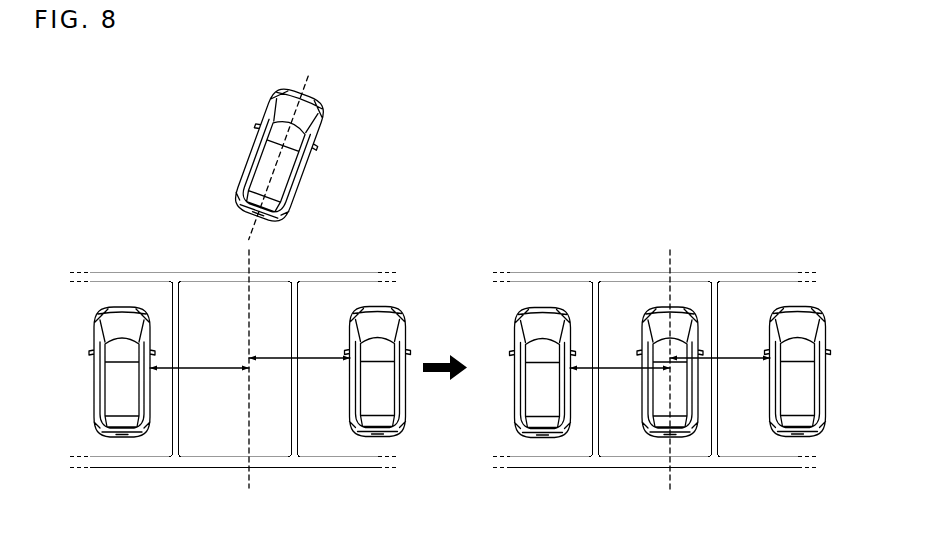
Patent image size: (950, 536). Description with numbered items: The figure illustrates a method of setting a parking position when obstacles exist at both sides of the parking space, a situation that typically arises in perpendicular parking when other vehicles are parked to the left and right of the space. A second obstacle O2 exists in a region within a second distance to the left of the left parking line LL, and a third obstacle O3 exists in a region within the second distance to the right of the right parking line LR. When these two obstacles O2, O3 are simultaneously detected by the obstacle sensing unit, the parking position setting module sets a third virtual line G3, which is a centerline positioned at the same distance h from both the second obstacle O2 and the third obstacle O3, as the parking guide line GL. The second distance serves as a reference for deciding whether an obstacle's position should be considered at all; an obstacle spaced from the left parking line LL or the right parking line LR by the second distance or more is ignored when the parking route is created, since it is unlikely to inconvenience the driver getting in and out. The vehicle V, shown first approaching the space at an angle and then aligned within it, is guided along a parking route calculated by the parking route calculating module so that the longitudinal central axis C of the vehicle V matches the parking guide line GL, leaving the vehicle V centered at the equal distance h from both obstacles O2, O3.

The vehicle V is at (280, 88).
The longitudinal central axis C is at (308, 77).
The left parking line LL is at (595, 299).
The right parking line LR is at (293, 299).
The second obstacle O2 is at (100, 327).
The third obstacle O3 is at (397, 328).
The distance h is at (460, 355).
The third virtual line G3 is at (247, 478).
The parking guide line GL is at (668, 478).